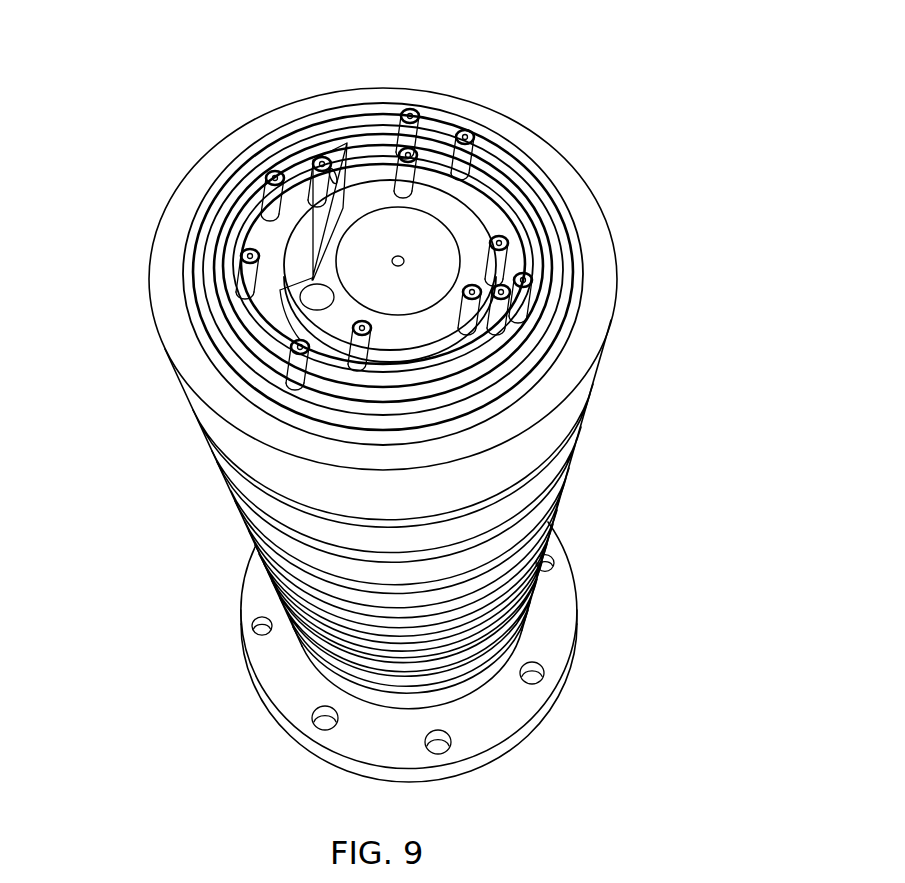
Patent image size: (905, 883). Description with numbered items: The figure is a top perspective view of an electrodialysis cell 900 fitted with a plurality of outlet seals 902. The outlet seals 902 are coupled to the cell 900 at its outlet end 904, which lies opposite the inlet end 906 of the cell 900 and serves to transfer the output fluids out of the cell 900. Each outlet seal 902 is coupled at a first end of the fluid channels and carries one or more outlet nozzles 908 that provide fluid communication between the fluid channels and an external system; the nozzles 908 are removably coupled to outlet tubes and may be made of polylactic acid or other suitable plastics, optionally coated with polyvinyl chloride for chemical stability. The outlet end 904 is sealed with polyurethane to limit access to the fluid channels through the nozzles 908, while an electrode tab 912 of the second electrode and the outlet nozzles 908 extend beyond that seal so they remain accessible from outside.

The electrodialysis cell 900 is at (150, 34).
The outlet seal 902 is at (309, 157).
The outlet end 904 is at (161, 228).
The inlet end 906 is at (283, 678).
The outlet nozzle 908 is at (413, 108).
The electrode tab 912 is at (352, 145).